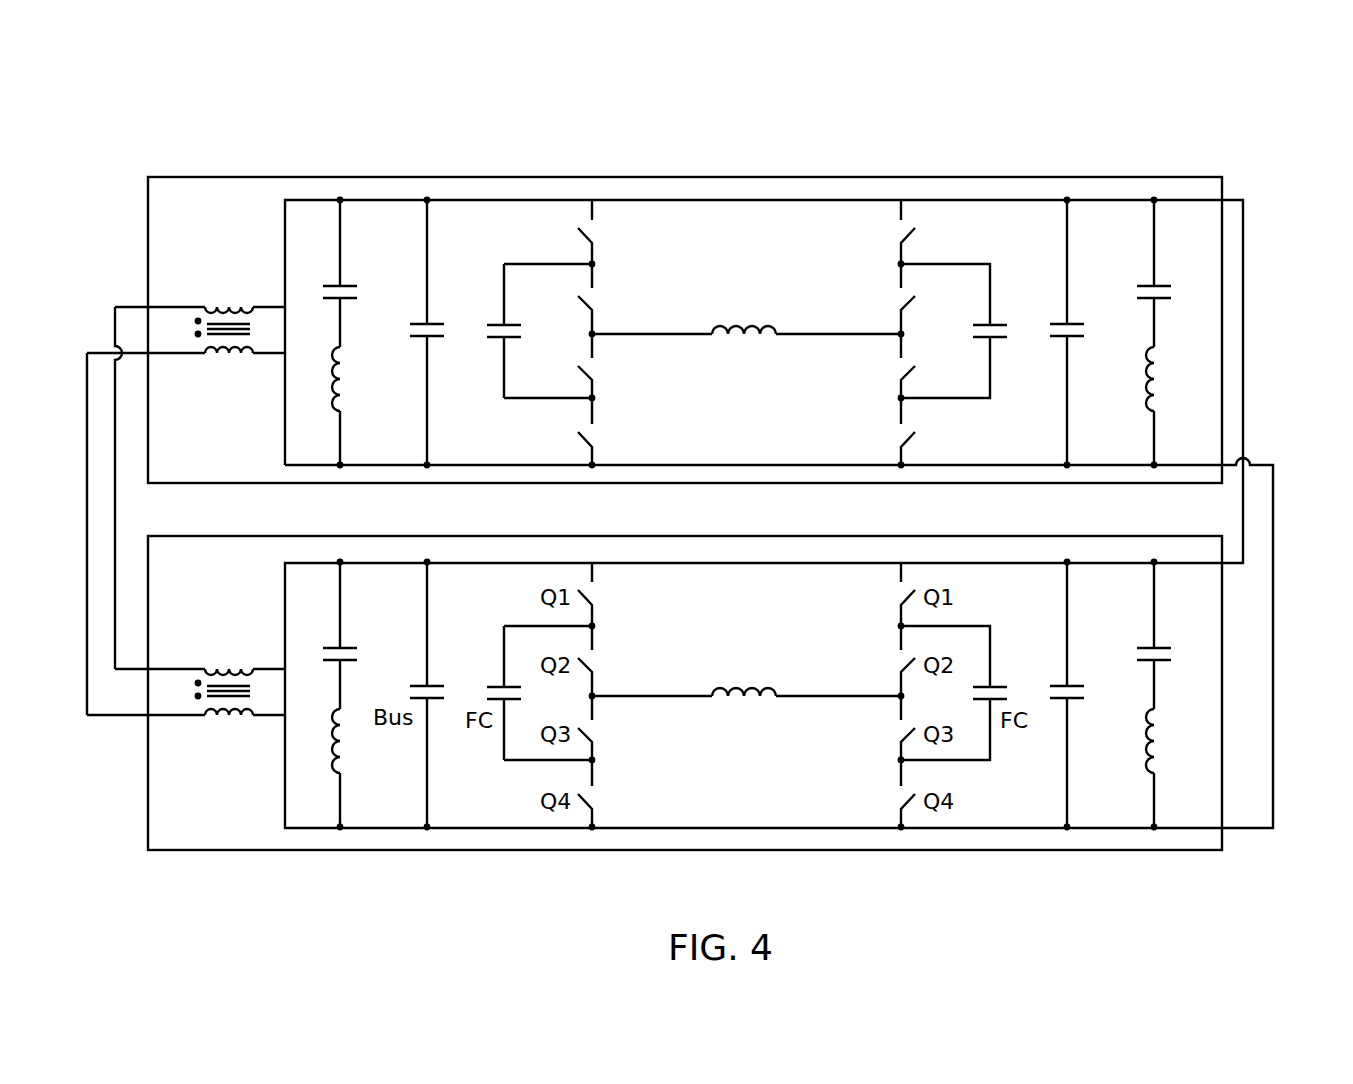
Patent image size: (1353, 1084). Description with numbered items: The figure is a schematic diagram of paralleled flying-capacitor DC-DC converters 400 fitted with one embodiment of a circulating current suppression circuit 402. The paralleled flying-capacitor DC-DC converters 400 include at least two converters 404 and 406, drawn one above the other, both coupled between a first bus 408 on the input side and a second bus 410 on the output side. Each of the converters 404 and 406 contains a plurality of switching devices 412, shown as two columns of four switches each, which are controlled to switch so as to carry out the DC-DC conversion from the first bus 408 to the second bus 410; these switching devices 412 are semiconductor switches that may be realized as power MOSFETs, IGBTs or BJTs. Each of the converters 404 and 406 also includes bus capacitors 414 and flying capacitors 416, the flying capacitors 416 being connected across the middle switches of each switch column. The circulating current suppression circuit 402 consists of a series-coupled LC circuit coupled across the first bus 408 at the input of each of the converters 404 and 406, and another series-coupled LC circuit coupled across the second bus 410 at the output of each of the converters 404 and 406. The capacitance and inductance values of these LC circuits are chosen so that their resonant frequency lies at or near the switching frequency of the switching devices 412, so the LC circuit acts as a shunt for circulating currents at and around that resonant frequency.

The paralleled flying-capacitor DC-DC converters 400 is at (282, 93).
The circulating current suppression circuit 402 is at (325, 277).
The converter 404 is at (759, 170).
The converter 406 is at (703, 858).
The first bus 408 is at (113, 725).
The second bus 410 is at (1255, 402).
The switching devices 412 is at (557, 215).
The bus capacitors 414 is at (408, 312).
The flying capacitors 416 is at (492, 318).